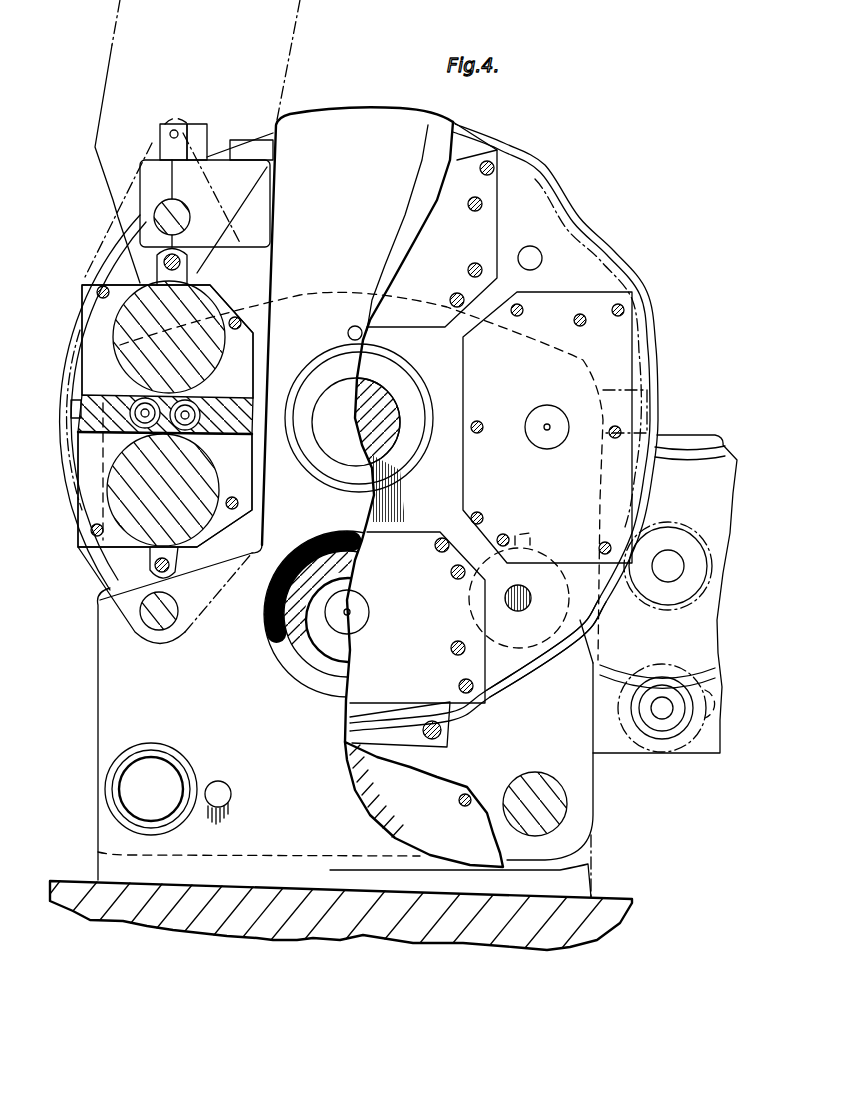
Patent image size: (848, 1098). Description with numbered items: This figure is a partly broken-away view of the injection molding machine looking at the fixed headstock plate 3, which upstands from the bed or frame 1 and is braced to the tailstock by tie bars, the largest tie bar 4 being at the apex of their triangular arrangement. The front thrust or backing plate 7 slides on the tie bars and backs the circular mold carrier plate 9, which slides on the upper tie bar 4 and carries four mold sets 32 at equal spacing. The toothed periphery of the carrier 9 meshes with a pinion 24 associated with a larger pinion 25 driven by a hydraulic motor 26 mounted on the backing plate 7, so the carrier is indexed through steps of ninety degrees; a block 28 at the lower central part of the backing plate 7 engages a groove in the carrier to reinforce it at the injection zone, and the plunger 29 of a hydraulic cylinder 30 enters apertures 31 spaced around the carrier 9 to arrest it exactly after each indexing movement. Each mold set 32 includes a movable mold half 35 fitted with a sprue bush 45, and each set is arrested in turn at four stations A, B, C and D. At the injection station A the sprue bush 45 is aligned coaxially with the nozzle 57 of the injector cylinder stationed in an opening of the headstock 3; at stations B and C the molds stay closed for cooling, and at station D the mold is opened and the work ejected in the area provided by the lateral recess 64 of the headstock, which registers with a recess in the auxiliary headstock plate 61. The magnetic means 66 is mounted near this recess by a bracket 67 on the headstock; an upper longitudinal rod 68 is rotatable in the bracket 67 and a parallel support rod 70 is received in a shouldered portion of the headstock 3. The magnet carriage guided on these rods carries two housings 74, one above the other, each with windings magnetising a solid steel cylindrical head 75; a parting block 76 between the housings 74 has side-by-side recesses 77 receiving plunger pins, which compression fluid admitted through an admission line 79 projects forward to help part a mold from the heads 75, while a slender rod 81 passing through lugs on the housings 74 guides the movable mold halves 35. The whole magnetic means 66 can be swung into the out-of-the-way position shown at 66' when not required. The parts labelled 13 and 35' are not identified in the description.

The bed or frame 1 is at (88, 883).
The fixed headstock plate 3 is at (361, 120).
The tie bar 4 is at (421, 352).
The backing plate 7 is at (580, 796).
The mold carrier plate 9 is at (537, 203).
The roller 13 is at (718, 705).
The pinion 24 is at (680, 530).
The larger pinion 25 is at (602, 665).
The hydraulic motor 26 is at (662, 740).
The block 28 is at (450, 735).
The plunger 29 is at (530, 606).
The hydraulic cylinder 30 is at (528, 660).
The apertures 31 is at (542, 262).
The mold sets 32 is at (457, 160).
The movable mold half 35 is at (417, 617).
The plate 35' is at (547, 427).
The sprue bush 45 is at (544, 412).
The nozzle 57 is at (342, 606).
The auxiliary headstock plate 61 is at (427, 133).
The lateral recess 64 is at (268, 280).
The magnetic means 66 is at (157, 388).
The out-of-the-way position of magnetic means 66' is at (181, 270).
The bracket 67 is at (220, 177).
The upper longitudinal rod 68 is at (182, 210).
The support rod 70 is at (160, 630).
The housings 74 is at (95, 323).
The cylindrical head 75 is at (120, 312).
The parting block 76 is at (90, 395).
The recesses 77 is at (200, 402).
The admission line 79 is at (70, 410).
The guide rod 81 is at (182, 262).
The injection station A is at (331, 627).
The cooling station B is at (551, 456).
The cooling station C is at (347, 197).
The ejection station D is at (74, 440).